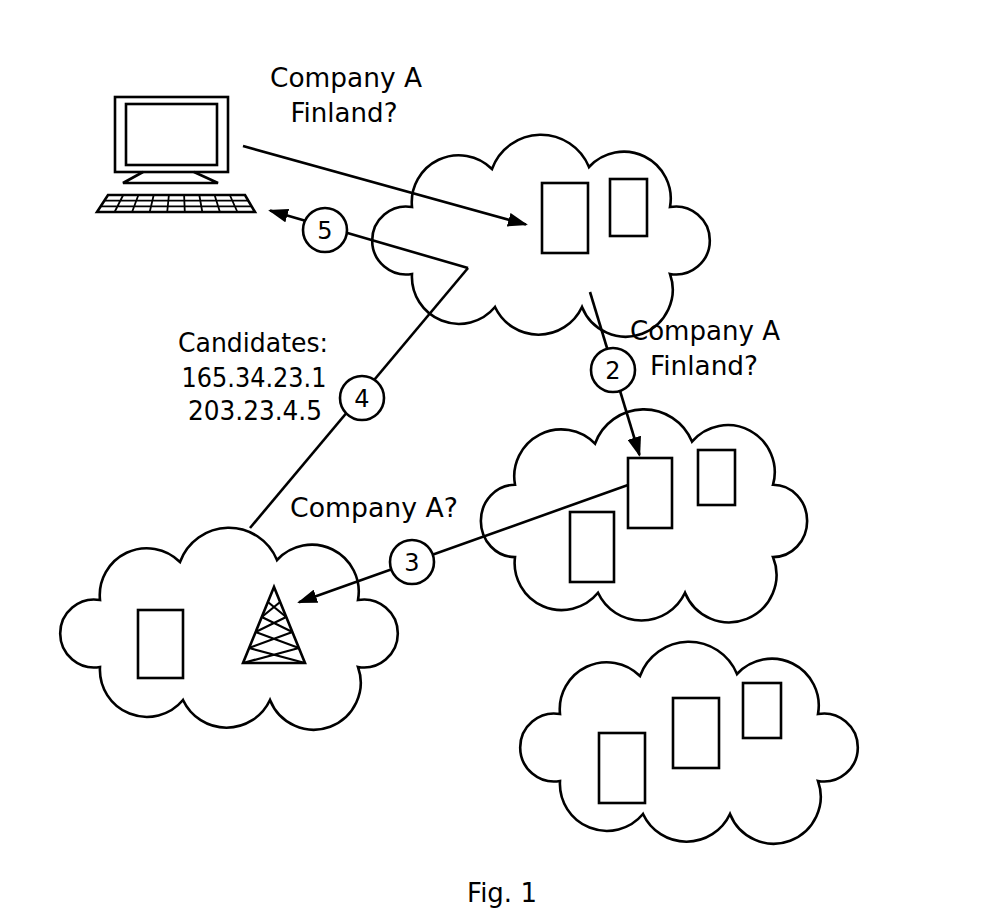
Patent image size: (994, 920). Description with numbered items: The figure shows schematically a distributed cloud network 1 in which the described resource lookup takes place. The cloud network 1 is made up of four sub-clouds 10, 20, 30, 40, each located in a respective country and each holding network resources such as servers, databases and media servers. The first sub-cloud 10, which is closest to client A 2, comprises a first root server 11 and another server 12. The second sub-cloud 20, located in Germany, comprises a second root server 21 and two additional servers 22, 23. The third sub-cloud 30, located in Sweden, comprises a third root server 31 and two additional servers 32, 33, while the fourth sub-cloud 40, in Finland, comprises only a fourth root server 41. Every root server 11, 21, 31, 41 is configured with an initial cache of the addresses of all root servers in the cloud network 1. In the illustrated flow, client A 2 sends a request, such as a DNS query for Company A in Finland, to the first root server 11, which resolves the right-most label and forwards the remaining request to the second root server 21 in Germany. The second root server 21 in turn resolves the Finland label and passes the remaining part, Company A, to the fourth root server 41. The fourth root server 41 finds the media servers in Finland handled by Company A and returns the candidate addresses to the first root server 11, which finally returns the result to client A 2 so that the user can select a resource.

The cloud network 1 is at (812, 88).
The client A 2 is at (115, 137).
The first sub-cloud 10 is at (568, 206).
The first root server 11 is at (563, 183).
The server 12 is at (645, 183).
The second sub-cloud 20 is at (673, 506).
The second root server 21 is at (672, 512).
The server 22 is at (585, 548).
The server 23 is at (717, 458).
The third sub-cloud 30 is at (717, 732).
The third root server 31 is at (681, 712).
The server 32 is at (617, 753).
The server 33 is at (772, 709).
The fourth sub-cloud 40 is at (255, 618).
The fourth root server 41 is at (165, 648).